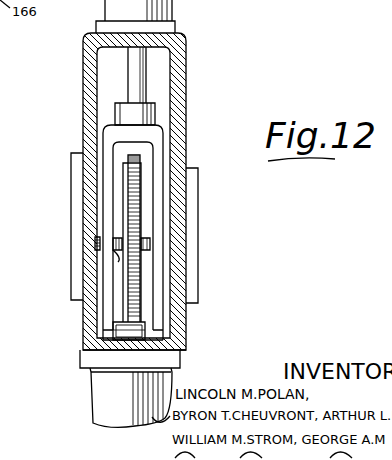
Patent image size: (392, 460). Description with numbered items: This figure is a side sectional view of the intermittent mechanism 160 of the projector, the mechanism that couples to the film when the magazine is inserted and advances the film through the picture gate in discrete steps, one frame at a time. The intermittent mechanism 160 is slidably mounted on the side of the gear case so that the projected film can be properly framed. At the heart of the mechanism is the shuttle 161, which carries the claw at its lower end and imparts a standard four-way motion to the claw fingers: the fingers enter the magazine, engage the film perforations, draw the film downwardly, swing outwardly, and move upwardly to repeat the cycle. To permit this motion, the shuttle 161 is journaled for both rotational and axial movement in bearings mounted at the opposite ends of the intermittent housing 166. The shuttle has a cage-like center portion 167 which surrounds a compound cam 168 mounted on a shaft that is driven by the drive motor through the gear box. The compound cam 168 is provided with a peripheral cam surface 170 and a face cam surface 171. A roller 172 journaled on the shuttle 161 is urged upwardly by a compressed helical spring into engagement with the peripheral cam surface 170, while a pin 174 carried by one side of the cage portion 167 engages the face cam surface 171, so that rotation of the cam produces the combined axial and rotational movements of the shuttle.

The intermittent mechanism 160 is at (207, 200).
The shuttle 161 is at (146, 86).
The intermittent housing 166 is at (178, 124).
The cage-like center portion 167 is at (160, 158).
The compound cam 168 is at (148, 186).
The peripheral cam surface 170 is at (131, 213).
The face cam surface 171 is at (125, 213).
The roller 172 is at (147, 321).
The pin 174 is at (117, 248).